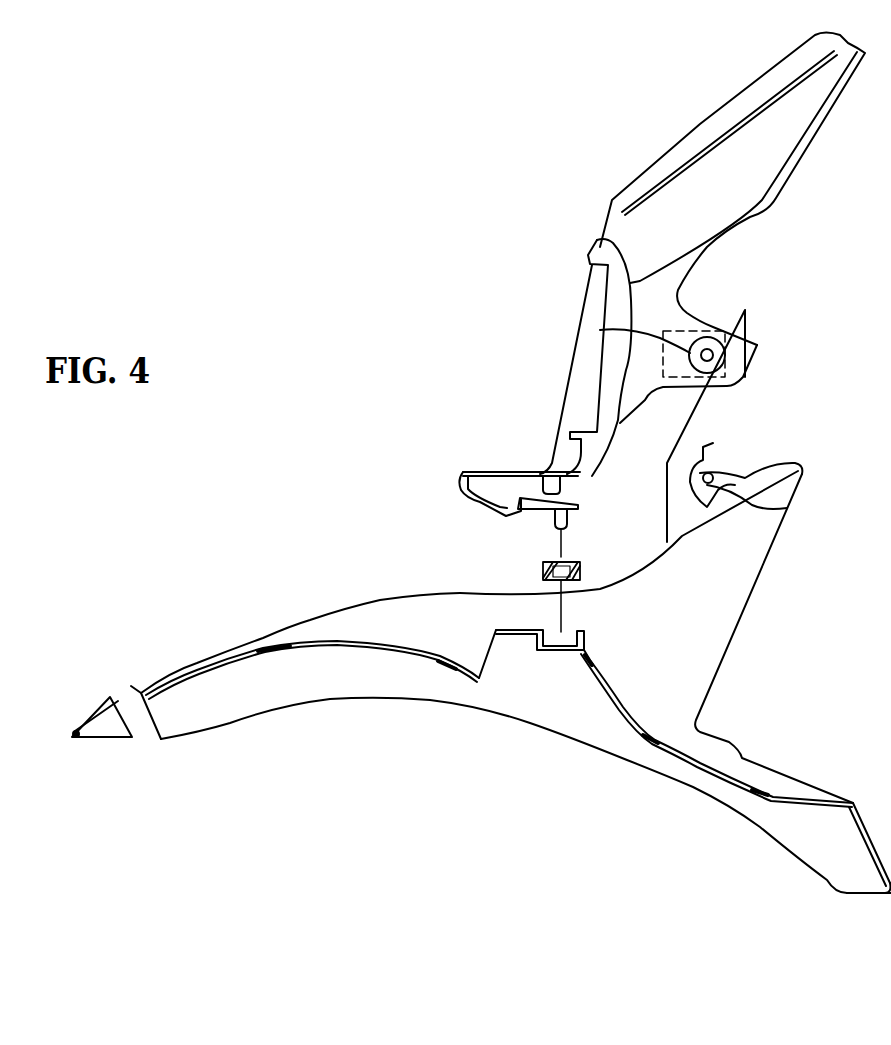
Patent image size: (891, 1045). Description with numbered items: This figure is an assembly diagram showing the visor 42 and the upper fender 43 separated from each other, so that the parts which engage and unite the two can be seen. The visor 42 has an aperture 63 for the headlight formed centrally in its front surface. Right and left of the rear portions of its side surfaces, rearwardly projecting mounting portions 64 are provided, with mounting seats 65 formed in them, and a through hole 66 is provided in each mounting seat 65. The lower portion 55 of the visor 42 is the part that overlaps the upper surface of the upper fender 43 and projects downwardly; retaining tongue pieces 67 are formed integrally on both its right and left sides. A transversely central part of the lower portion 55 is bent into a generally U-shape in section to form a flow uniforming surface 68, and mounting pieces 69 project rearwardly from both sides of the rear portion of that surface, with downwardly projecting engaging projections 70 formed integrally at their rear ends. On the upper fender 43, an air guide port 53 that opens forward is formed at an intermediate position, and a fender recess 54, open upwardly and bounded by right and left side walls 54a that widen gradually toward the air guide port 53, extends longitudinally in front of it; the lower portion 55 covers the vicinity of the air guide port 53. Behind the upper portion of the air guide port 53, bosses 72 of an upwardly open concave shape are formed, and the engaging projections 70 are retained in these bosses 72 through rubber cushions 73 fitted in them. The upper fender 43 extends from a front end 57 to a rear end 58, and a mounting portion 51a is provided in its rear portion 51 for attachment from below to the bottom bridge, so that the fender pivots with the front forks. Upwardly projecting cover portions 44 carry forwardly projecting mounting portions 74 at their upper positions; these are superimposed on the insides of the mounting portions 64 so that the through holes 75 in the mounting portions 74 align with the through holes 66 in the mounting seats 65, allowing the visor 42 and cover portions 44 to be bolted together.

The visor 42 is at (650, 140).
The upper fender 43 is at (197, 656).
The cover portions 44 is at (744, 587).
The rear portion 51 is at (742, 757).
The mounting portion 51a is at (660, 750).
The air guide port 53 is at (495, 655).
The fender recess 54 is at (335, 640).
The side walls 54a is at (433, 625).
The lower portion 55 is at (527, 474).
The front end 57 is at (70, 740).
The rear end 58 is at (890, 893).
The aperture 63 is at (592, 283).
The mounting portions 64 is at (765, 353).
The mounting seats 65 is at (600, 330).
The through hole 66 is at (663, 400).
The retaining tongue pieces 67 is at (548, 470).
The flow uniforming surface 68 is at (507, 512).
The mounting pieces 69 is at (562, 498).
The engaging projections 70 is at (572, 518).
The bosses 72 is at (575, 628).
The rubber cushions 73 is at (540, 566).
The mounting portions 74 is at (704, 460).
The through holes 75 is at (787, 508).